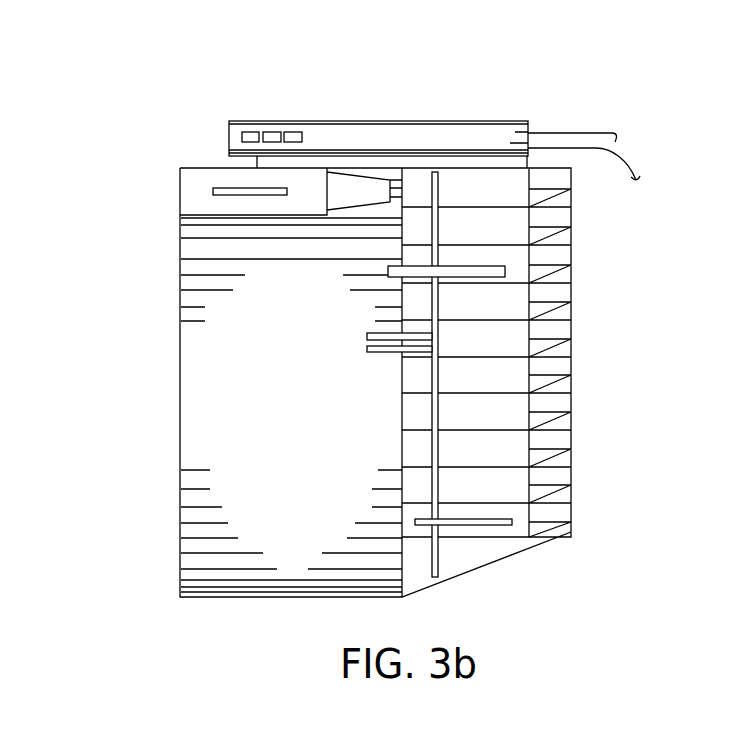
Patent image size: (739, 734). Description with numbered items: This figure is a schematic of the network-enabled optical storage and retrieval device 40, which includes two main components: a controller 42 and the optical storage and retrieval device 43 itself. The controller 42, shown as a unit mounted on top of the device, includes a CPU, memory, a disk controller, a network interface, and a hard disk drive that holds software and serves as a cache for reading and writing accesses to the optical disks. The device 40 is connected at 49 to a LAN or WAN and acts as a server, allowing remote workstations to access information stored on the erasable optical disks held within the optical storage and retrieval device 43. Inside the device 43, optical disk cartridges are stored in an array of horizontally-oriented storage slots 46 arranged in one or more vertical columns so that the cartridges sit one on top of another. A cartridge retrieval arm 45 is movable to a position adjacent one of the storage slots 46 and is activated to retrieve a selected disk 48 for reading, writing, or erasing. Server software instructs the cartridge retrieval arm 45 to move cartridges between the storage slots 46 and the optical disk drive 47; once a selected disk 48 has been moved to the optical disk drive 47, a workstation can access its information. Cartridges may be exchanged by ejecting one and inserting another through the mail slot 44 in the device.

The network-enabled optical storage and retrieval device 40 is at (157, 320).
The controller 42 is at (420, 120).
The optical storage and retrieval device 43 is at (235, 587).
The mail slot 44 is at (218, 188).
The cartridge retrieval arm 45 is at (368, 348).
The storage slots 46 is at (563, 423).
The optical disk drive 47 is at (475, 528).
The selected disk 48 is at (506, 272).
The network connection 49 is at (577, 132).